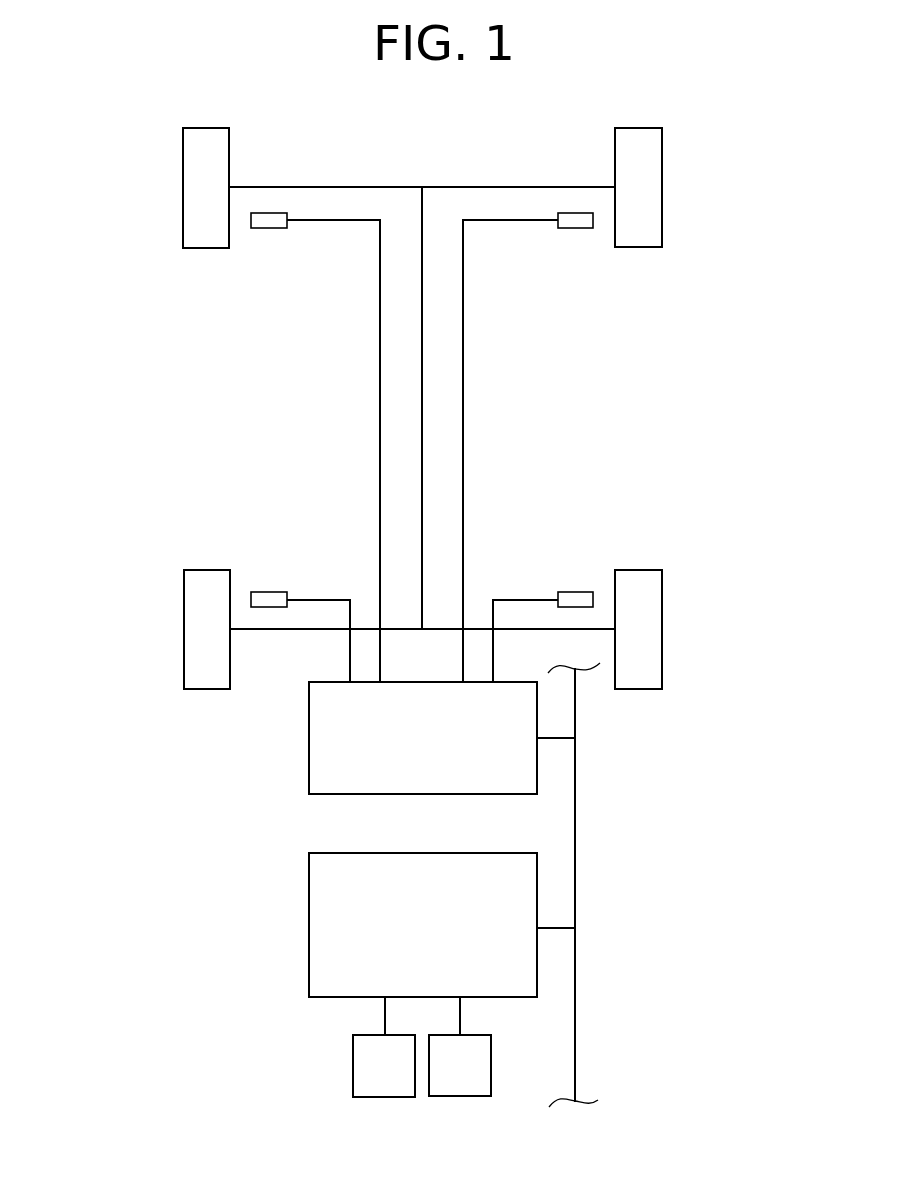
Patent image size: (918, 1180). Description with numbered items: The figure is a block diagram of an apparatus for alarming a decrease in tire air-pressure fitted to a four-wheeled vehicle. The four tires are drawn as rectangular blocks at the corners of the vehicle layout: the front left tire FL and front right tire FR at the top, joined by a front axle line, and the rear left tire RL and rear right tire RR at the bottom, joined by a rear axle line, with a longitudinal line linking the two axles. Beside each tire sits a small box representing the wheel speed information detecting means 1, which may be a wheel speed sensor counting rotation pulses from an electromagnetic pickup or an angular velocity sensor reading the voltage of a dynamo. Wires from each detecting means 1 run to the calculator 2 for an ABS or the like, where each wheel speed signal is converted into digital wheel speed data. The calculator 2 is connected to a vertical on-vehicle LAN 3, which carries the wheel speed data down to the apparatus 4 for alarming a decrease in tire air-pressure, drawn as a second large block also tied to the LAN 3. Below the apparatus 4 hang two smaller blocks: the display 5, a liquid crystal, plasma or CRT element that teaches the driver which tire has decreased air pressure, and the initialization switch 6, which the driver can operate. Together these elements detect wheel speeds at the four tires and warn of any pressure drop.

The wheel speed information detecting means 1 is at (261, 221).
The calculator 2 is at (523, 777).
The on-vehicle LAN 3 is at (575, 848).
The apparatus for alarming a decrease in tire air-pressure 4 is at (523, 968).
The display 5 is at (482, 1058).
The initialization switch 6 is at (366, 1055).
The front left tire FL is at (196, 162).
The front right tire FR is at (647, 165).
The rear left tire RL is at (197, 614).
The rear right tire RR is at (647, 617).